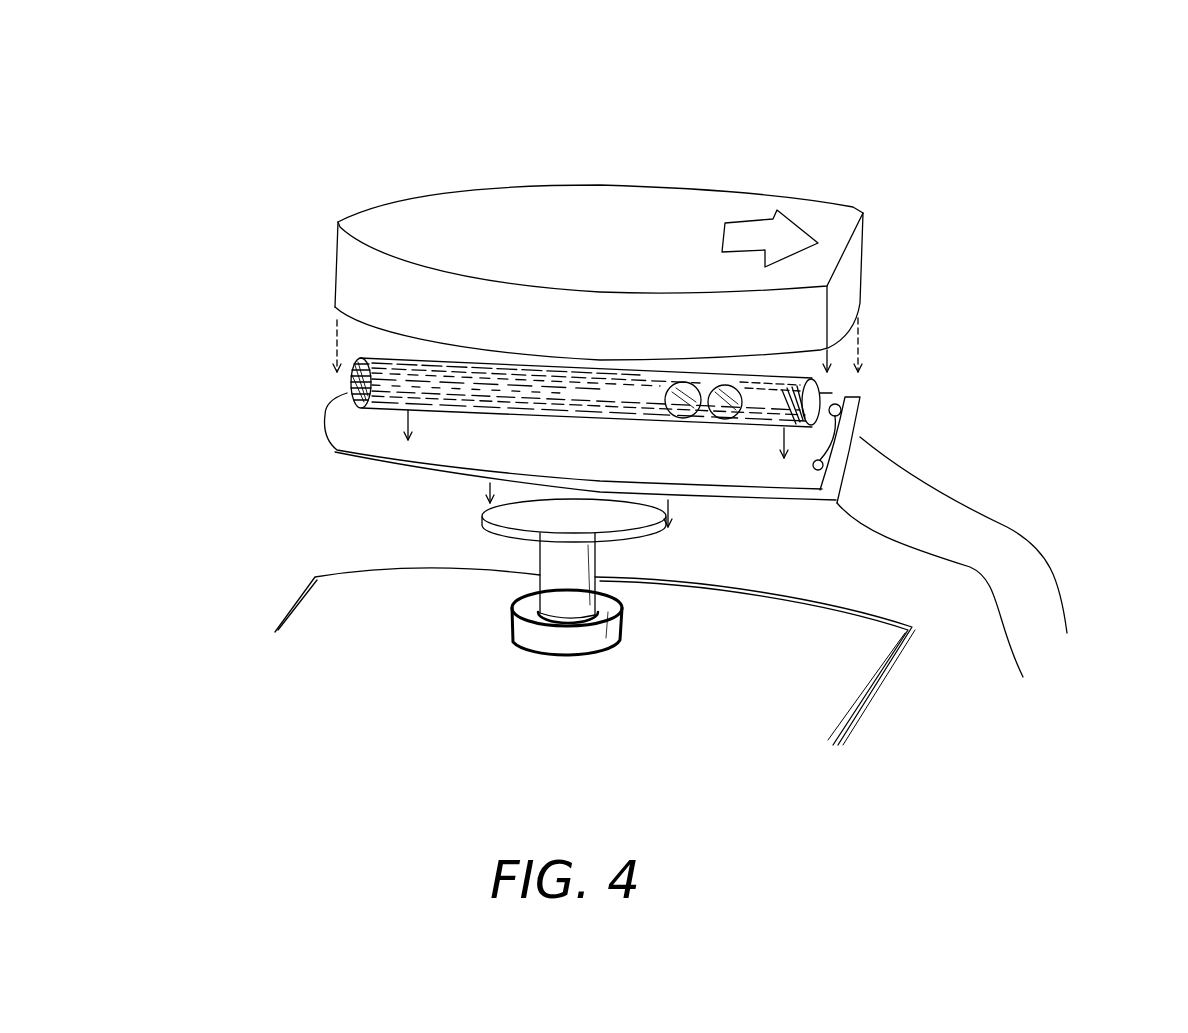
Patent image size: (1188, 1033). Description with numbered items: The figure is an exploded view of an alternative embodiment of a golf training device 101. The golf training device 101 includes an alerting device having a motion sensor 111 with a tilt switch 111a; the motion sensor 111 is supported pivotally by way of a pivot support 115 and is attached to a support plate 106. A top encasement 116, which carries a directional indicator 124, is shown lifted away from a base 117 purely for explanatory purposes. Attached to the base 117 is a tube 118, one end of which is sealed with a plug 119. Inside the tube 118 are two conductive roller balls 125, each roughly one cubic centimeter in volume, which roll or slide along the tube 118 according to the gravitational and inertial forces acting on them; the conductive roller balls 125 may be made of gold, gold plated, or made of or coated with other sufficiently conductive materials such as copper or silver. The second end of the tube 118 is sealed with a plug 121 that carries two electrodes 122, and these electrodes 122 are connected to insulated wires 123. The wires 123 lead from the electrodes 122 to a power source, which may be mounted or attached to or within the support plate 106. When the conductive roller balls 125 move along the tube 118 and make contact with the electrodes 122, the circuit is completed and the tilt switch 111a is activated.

The golf training device 101 is at (1035, 140).
The support plate 106 is at (830, 668).
The motion sensor 111 is at (170, 228).
The tilt switch 111a is at (893, 332).
The pivot support 115 is at (562, 580).
The top encasement 116 is at (630, 207).
The base 117 is at (863, 440).
The tube 118 is at (450, 400).
The plug 119 is at (350, 393).
The plug 121 is at (830, 392).
The electrodes 122 is at (780, 395).
The insulated wires 123 is at (937, 553).
The directional indicator 124 is at (800, 222).
The conductive roller balls 125 is at (710, 418).